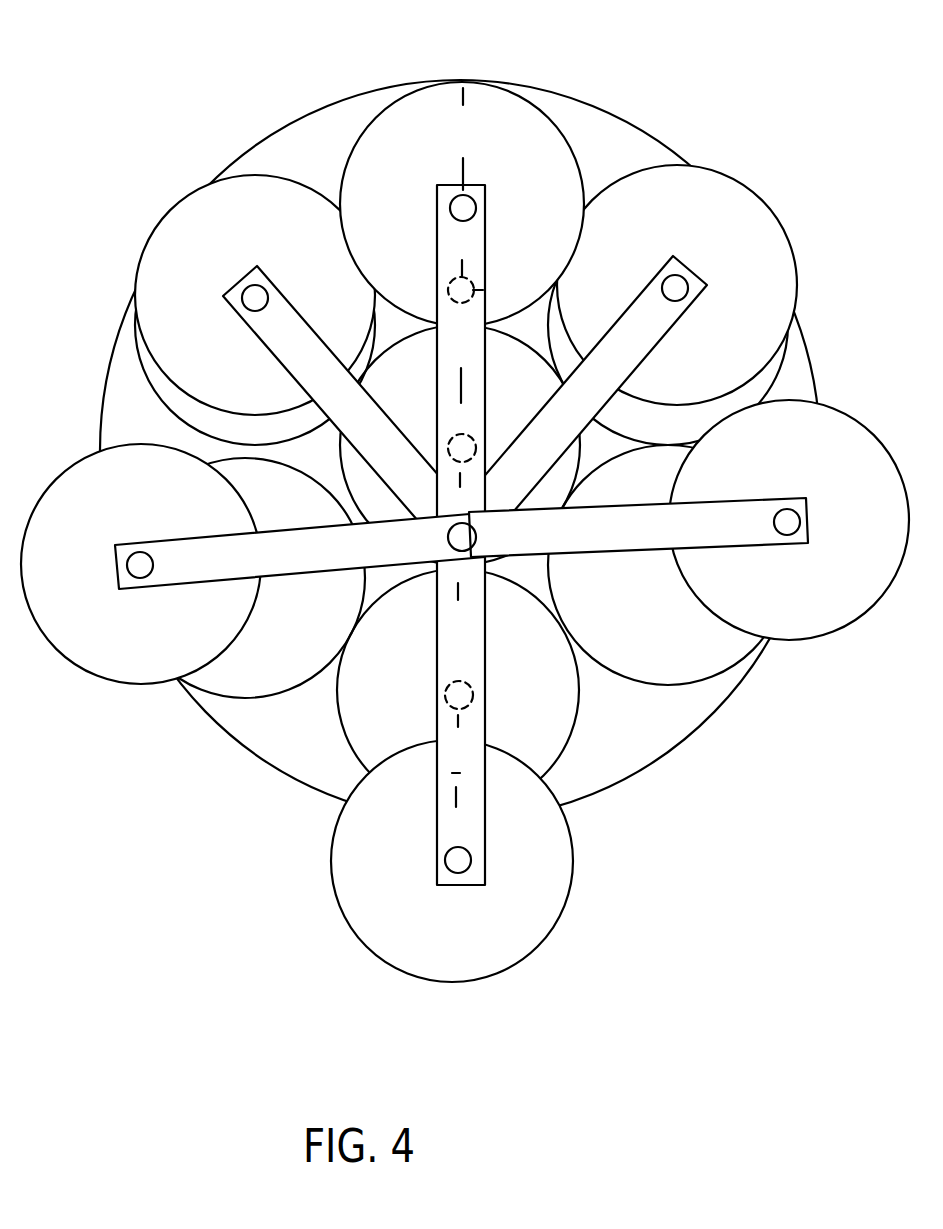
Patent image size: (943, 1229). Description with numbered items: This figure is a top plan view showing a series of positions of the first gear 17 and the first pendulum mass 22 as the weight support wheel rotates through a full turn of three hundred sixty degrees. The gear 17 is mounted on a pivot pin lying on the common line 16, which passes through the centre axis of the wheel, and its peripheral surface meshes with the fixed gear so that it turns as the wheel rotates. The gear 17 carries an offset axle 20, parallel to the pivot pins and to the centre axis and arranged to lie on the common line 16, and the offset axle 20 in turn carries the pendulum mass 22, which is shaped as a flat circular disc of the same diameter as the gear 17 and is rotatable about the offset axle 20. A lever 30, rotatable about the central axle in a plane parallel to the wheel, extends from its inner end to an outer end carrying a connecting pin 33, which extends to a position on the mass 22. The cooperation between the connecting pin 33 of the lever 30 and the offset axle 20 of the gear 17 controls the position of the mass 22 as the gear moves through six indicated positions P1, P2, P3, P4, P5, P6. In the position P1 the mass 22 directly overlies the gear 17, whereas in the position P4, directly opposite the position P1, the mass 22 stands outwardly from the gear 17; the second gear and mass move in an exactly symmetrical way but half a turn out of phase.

The common line 16 is at (466, 392).
The first gear 17 is at (400, 145).
The offset axle 20 is at (497, 292).
The first pendulum mass 22 is at (438, 108).
The lever 30 is at (557, 415).
The connecting pin 33 is at (470, 208).
The first position P1 is at (495, 112).
The second position P2 is at (800, 343).
The third position P3 is at (708, 652).
The fourth position P4 is at (563, 705).
The fifth position P5 is at (268, 677).
The sixth position P6 is at (147, 382).